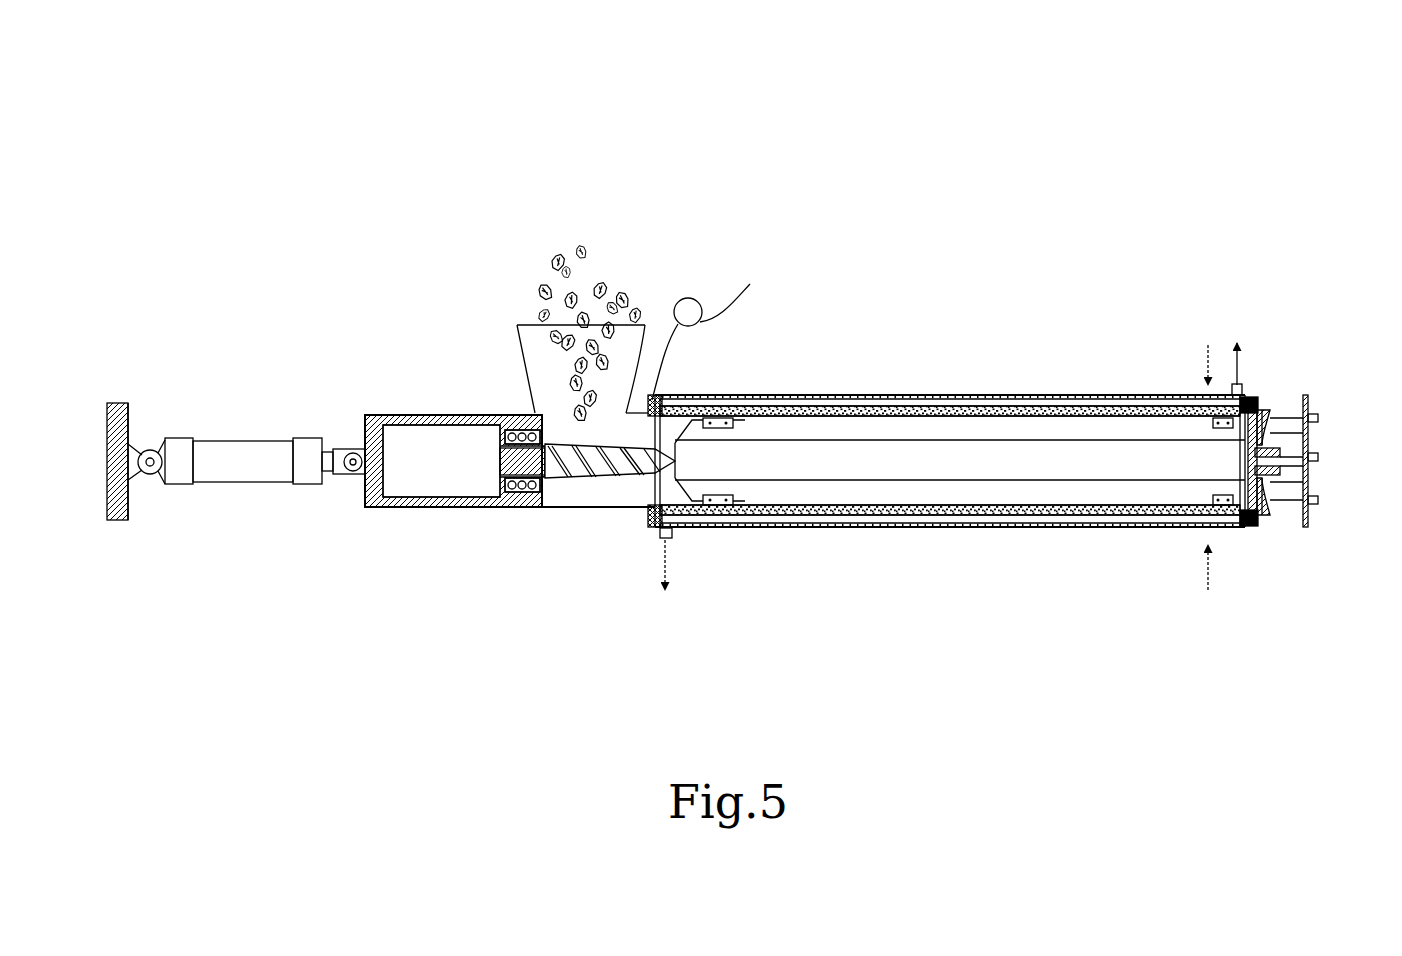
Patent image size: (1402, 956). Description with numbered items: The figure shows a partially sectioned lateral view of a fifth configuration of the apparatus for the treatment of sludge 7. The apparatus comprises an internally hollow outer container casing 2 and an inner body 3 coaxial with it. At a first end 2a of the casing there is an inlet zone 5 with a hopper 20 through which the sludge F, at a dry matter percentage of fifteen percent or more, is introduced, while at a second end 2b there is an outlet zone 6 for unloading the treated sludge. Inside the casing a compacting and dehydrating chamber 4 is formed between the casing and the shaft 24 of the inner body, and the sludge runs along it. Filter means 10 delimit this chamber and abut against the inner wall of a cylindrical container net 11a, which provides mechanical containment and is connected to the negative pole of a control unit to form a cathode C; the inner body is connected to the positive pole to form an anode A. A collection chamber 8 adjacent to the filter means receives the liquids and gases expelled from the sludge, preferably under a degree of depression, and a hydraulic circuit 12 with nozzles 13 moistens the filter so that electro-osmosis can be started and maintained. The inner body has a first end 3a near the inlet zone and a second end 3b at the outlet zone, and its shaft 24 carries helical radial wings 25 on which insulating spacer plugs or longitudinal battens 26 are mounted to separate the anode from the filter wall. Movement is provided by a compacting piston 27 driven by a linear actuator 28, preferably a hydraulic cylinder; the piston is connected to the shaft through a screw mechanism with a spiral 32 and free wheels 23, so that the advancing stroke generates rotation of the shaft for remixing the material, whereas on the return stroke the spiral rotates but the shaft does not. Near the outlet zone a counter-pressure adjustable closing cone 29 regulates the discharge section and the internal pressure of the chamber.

The apparatus for the treatment of sludge 7 is at (280, 345).
The inlet zone 5 is at (505, 285).
The hopper 20 is at (545, 357).
The sludge F is at (615, 285).
The cathode C is at (780, 288).
The anode A is at (1300, 455).
The outer container casing 2 is at (1053, 394).
The first end of the outer casing 2a is at (637, 513).
The second end of the outer casing 2b is at (1243, 386).
The inner body 3 is at (905, 439).
The first end of the inner body 3a is at (692, 418).
The second end of the inner body 3b is at (1250, 470).
The compacting and dehydrating chamber 4 is at (1093, 438).
The outlet zone 6 is at (1275, 395).
The collection chamber 8 is at (960, 406).
The filter means 10 is at (1010, 399).
The container net 11a is at (840, 396).
The hydraulic circuit 12 is at (780, 396).
The nozzles 13 is at (1175, 397).
The free wheels 23 is at (523, 487).
The shaft 24 is at (1130, 465).
The radial wings 25 is at (1140, 438).
The spacer plugs or longitudinal battens 26 is at (733, 430).
The compacting piston 27 is at (440, 472).
The linear actuator 28 is at (238, 463).
The counter-pressure adjustable closing cone 29 is at (1262, 440).
The spiral 32 is at (593, 476).